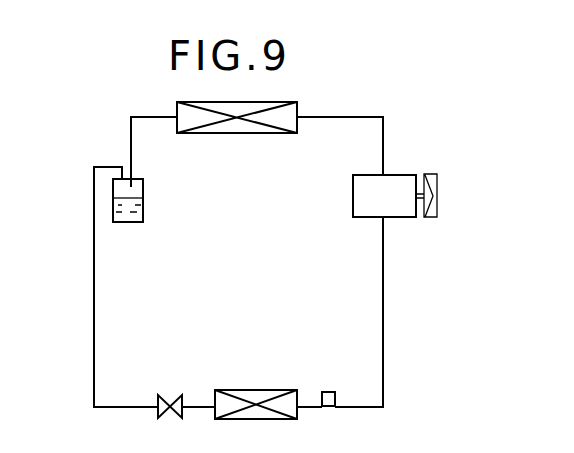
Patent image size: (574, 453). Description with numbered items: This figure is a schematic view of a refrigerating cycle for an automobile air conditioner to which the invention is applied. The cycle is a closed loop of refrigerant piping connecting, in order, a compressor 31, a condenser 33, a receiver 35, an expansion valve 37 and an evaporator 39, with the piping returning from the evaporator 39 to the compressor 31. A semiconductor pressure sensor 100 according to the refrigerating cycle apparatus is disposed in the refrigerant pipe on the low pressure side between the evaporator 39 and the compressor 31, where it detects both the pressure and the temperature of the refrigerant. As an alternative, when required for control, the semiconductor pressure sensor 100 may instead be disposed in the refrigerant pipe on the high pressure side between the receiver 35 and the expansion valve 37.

The compressor 31 is at (353, 200).
The condenser 33 is at (298, 123).
The receiver 35 is at (143, 205).
The expansion valve 37 is at (162, 393).
The evaporator 39 is at (268, 389).
The semiconductor pressure sensor 100 is at (331, 390).